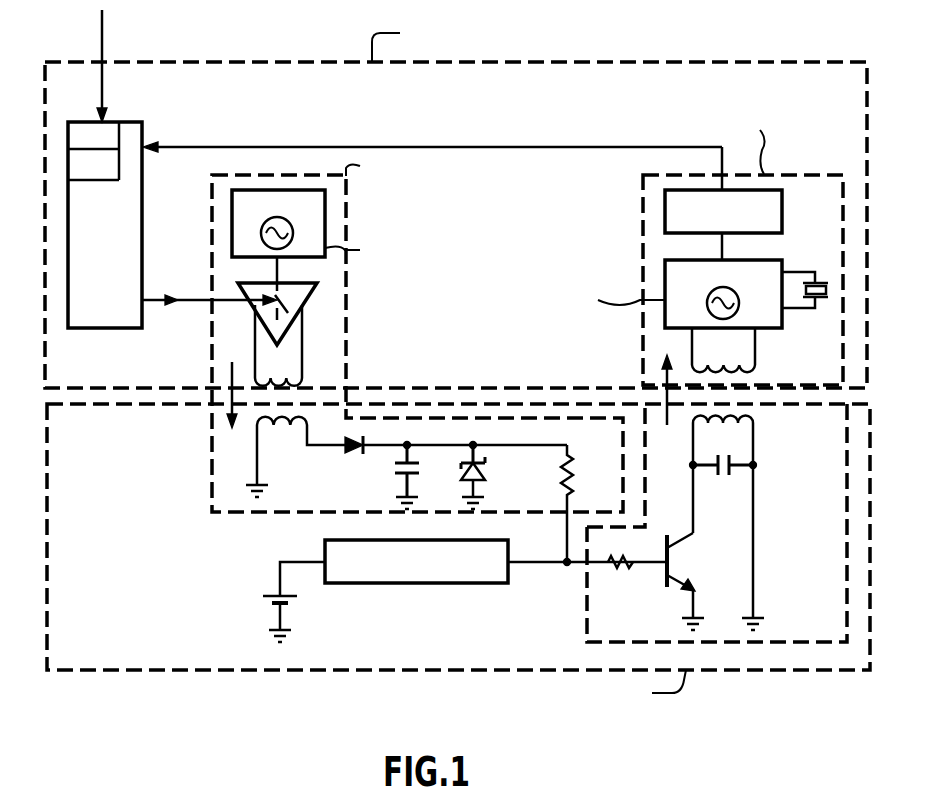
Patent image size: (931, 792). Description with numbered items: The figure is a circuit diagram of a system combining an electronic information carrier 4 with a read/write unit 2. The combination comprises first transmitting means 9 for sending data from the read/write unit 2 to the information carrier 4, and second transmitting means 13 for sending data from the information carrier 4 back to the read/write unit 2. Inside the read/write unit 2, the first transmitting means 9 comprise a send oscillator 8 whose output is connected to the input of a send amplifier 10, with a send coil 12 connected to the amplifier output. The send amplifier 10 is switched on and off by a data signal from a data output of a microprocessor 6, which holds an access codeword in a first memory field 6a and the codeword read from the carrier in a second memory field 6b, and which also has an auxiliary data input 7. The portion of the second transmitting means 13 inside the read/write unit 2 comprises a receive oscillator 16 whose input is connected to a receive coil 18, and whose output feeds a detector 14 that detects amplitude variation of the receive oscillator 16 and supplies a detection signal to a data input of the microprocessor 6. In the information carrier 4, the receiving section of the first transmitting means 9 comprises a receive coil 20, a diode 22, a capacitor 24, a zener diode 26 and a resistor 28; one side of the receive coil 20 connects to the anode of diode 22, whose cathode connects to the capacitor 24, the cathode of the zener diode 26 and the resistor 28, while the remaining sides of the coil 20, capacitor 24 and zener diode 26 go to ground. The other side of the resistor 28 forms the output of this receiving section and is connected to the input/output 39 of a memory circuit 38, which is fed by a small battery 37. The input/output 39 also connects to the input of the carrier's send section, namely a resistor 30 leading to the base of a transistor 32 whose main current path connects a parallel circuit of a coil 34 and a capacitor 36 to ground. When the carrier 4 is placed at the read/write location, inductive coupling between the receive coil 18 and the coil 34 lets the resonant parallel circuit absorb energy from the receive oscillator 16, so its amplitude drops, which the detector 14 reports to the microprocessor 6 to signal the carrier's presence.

The read/write unit 2 is at (768, 61).
The electronic information carrier 4 is at (788, 670).
The microprocessor 6 is at (142, 128).
The first memory field 6a is at (90, 130).
The second memory field 6b is at (113, 163).
The auxiliary data input 7 is at (110, 36).
The send oscillator 8 is at (325, 220).
The first transmitting means 9 is at (210, 218).
The send amplifier 10 is at (317, 293).
The send coil 12 is at (302, 372).
The second transmitting means 13 is at (640, 213).
The detector 14 is at (782, 213).
The receive oscillator 16 is at (786, 260).
The receive coil 18 is at (757, 365).
The receive coil 20 is at (297, 430).
The diode 22 is at (350, 452).
The capacitor 24 is at (397, 463).
The zener diode 26 is at (485, 478).
The resistor 28 is at (578, 483).
The resistor 30 is at (625, 568).
The transistor 32 is at (680, 560).
The coil 34 is at (757, 423).
The capacitor 36 is at (725, 475).
The battery 37 is at (263, 594).
The memory circuit 38 is at (412, 584).
The input/output 39 is at (546, 565).